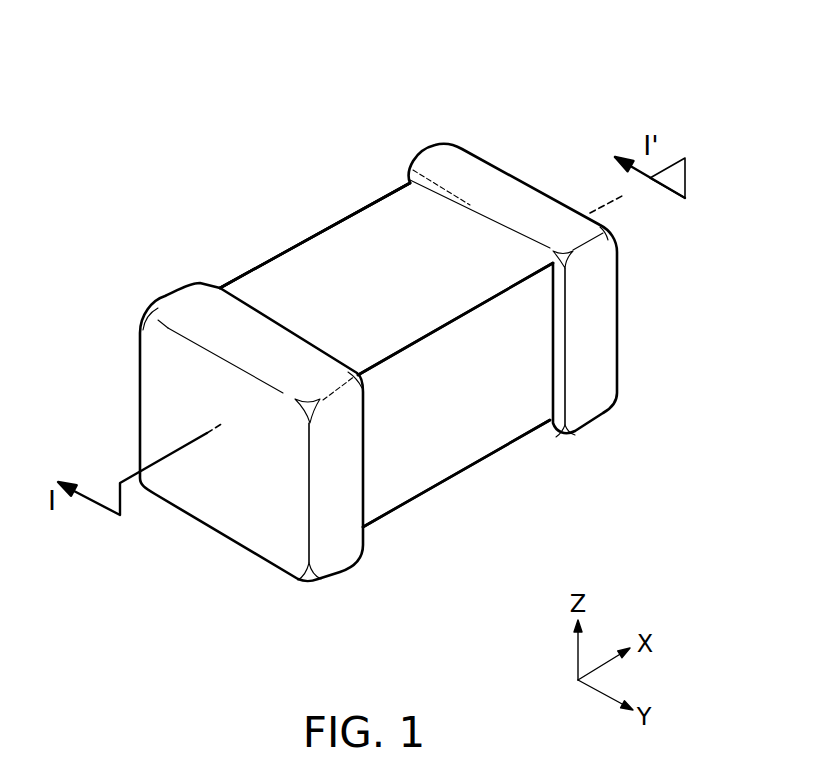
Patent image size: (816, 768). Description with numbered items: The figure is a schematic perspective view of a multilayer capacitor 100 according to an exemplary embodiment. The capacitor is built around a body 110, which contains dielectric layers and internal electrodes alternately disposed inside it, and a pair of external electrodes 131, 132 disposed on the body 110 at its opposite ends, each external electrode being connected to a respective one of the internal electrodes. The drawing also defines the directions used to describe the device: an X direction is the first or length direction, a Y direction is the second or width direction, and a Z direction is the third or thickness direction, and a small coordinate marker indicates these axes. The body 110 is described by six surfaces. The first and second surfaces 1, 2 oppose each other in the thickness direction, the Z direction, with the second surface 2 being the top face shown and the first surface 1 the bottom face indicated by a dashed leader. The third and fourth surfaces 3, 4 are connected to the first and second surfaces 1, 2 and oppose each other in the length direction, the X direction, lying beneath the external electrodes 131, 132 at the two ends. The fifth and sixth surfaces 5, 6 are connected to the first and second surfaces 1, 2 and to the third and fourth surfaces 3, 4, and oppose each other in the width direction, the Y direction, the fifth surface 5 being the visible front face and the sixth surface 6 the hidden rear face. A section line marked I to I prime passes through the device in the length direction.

The multilayer capacitor 100 is at (320, 35).
The body 110 is at (263, 284).
The external electrode 131 is at (184, 307).
The external electrode 132 is at (437, 160).
The first surface 1 is at (399, 470).
The second surface 2 is at (393, 236).
The third surface 3 is at (218, 487).
The fourth surface 4 is at (600, 278).
The fifth surface 5 is at (478, 412).
The sixth surface 6 is at (312, 263).